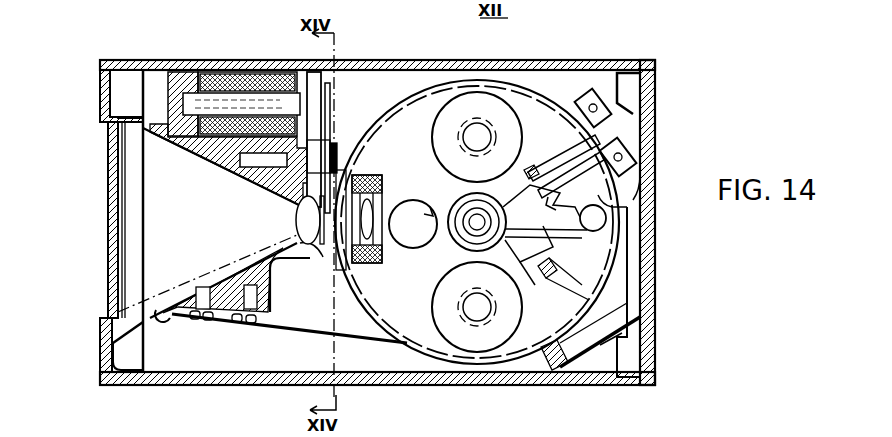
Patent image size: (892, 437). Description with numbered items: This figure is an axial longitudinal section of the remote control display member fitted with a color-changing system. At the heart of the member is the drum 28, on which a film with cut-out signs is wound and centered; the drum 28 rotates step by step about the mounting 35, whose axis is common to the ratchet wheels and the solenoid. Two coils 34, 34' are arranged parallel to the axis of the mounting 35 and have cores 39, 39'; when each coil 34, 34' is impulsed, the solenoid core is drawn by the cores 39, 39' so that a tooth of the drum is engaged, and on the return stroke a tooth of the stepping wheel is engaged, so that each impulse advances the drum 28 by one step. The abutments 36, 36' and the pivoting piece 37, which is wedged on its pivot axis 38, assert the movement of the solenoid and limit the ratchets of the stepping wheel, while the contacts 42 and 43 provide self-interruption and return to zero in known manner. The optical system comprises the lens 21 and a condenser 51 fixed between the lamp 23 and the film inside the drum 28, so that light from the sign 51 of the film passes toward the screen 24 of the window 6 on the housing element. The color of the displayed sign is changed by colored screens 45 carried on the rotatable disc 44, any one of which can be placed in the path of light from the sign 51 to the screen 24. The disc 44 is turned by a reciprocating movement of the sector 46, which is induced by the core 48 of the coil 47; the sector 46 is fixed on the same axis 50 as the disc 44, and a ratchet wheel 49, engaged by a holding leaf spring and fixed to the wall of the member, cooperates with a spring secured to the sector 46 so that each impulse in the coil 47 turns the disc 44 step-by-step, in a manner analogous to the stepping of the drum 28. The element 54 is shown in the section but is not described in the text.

The window 6 is at (112, 302).
The lens 21 is at (290, 227).
The lamp 23 is at (422, 240).
The screen 24 is at (117, 200).
The drum 28 is at (547, 97).
The coil 34 is at (477, 342).
The coil 34' is at (477, 103).
The mounting 35 is at (463, 208).
The abutment 36 is at (547, 271).
The abutment 36' is at (564, 166).
The pivoting piece 37 is at (643, 202).
The arm 38 is at (540, 227).
The core 39 is at (441, 307).
The core 39' is at (510, 137).
The contact 42 is at (650, 182).
The contact 43 is at (640, 343).
The rotatable disc 44 is at (333, 117).
The colored screen 45 is at (345, 80).
The sector 46 is at (307, 77).
The coil 47 is at (227, 77).
The core 48 is at (185, 95).
The ratchet wheel 49 is at (290, 197).
The axis 50 is at (243, 160).
The condenser 51 is at (281, 295).
The lens holder 54 is at (363, 258).